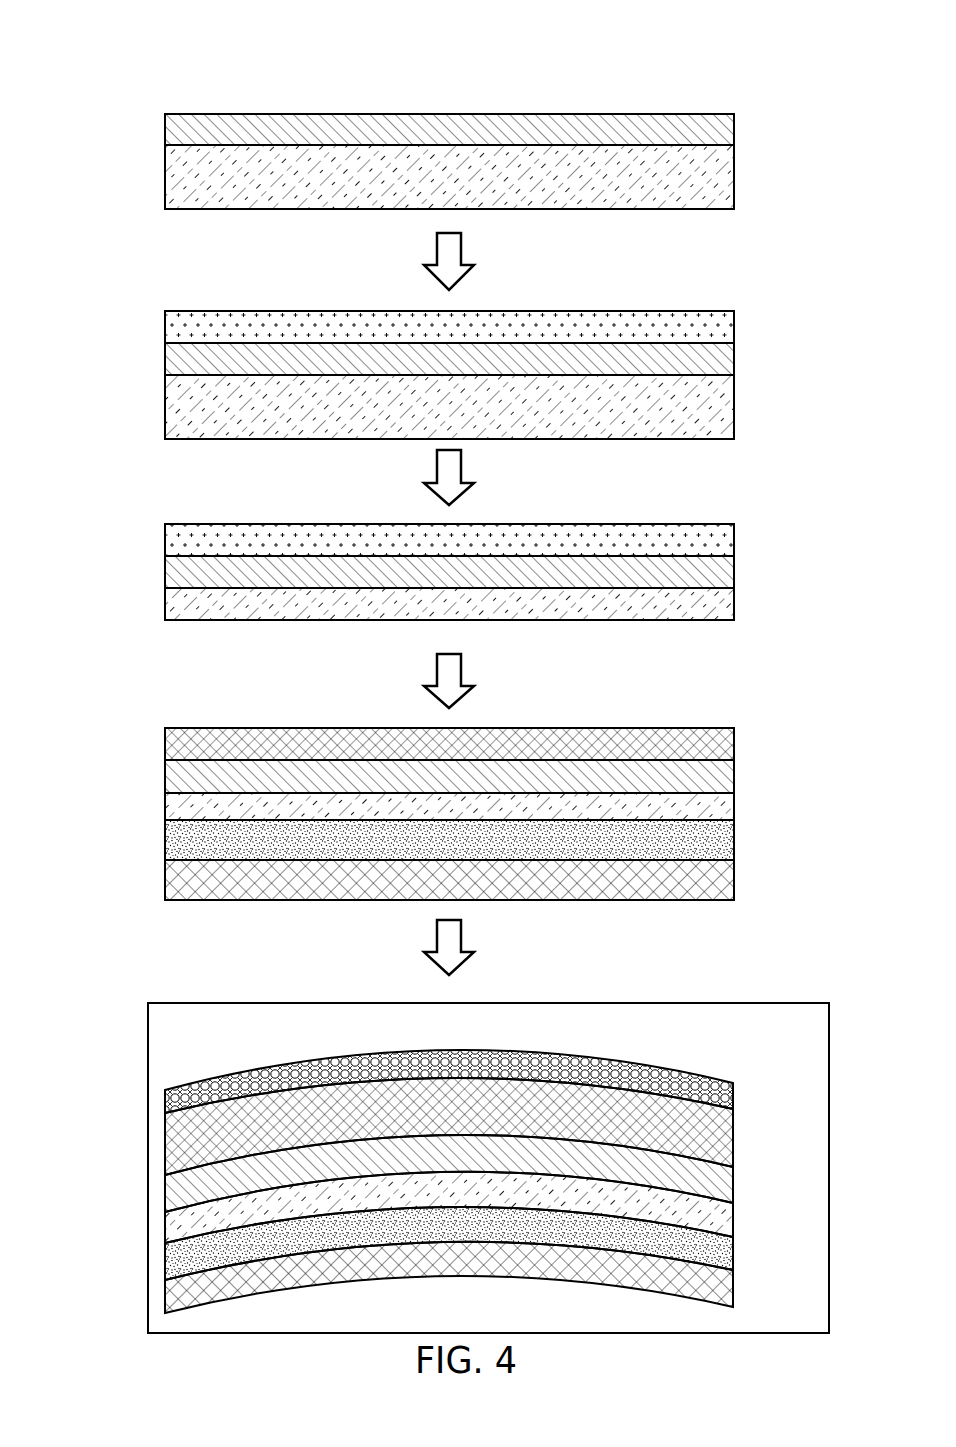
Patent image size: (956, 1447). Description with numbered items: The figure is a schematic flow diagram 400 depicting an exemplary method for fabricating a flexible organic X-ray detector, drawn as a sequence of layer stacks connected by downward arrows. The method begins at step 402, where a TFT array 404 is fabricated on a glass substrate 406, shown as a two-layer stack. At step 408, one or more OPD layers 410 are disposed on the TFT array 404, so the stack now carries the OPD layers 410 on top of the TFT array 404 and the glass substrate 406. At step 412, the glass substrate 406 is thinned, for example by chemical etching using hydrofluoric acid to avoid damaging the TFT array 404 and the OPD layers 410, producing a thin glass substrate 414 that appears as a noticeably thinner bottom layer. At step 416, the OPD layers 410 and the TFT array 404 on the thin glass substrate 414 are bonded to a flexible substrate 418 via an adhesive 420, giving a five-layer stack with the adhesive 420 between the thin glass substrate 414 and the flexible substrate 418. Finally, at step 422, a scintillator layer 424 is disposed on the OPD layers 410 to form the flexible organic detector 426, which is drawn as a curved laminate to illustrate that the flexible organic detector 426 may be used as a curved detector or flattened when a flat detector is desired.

The schematic flow diagram 400 is at (752, 38).
The step 402 is at (150, 97).
The TFT array 404 is at (735, 125).
The glass substrate 406 is at (735, 172).
The step 408 is at (150, 296).
The OPD layers 410 is at (735, 322).
The step 412 is at (150, 504).
The thin glass substrate 414 is at (735, 601).
The step 416 is at (150, 714).
The flexible substrate 418 is at (735, 882).
The adhesive 420 is at (735, 834).
The step 422 is at (116, 992).
The scintillator layer 424 is at (735, 1096).
The flexible organic detector 426 is at (228, 1047).